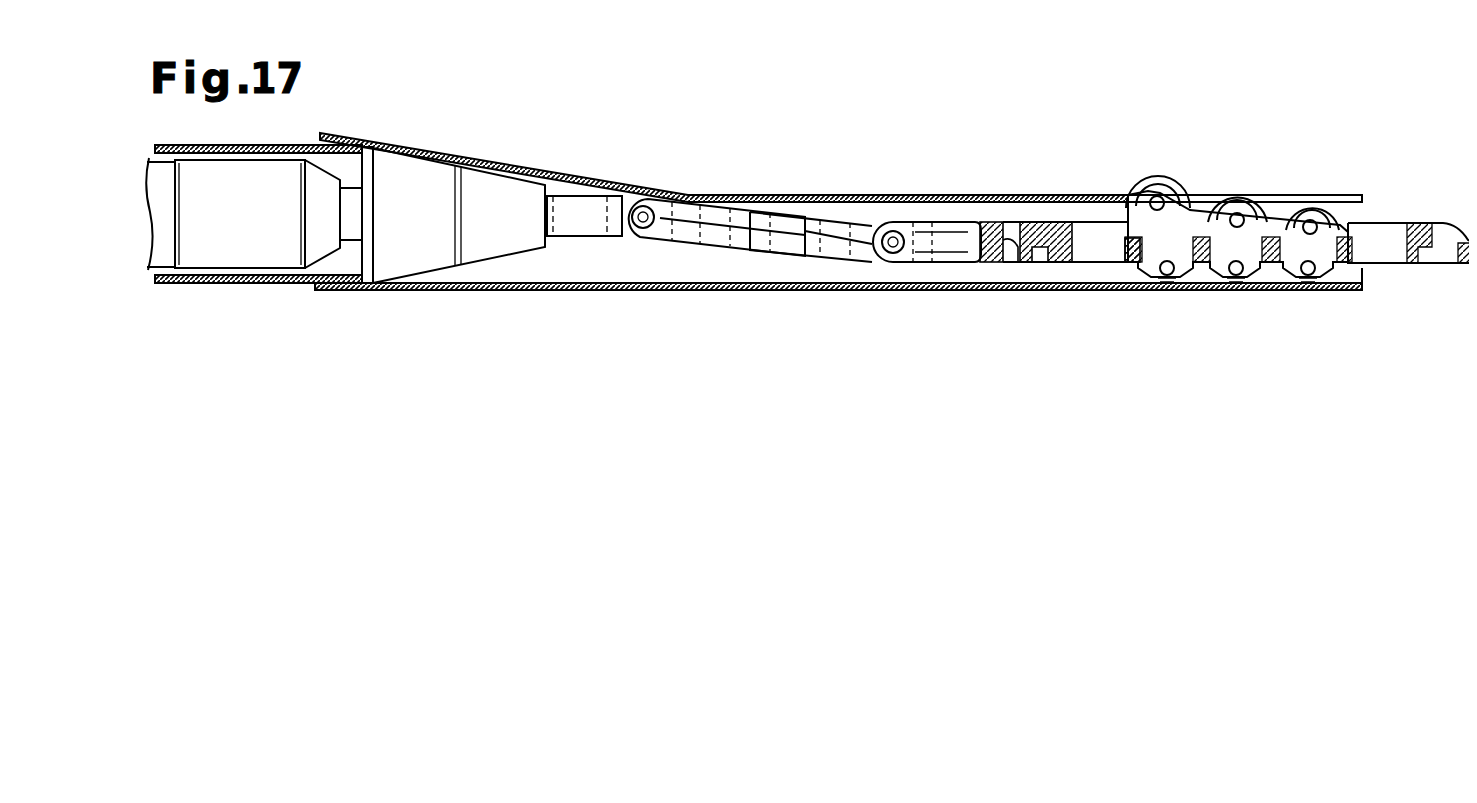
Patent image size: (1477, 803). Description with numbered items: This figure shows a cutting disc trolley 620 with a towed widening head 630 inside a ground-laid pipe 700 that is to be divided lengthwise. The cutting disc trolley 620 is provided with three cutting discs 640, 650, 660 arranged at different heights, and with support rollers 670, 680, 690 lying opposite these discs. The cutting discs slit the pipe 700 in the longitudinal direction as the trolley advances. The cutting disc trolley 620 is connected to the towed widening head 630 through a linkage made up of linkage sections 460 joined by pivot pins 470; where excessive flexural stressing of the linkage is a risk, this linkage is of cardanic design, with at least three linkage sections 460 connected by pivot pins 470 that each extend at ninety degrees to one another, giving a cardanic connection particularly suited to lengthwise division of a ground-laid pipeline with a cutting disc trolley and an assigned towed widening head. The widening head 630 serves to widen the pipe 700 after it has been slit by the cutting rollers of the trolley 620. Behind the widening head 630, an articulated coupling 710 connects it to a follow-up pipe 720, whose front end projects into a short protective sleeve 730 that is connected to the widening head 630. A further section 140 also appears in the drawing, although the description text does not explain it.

The inner tube section 140 is at (590, 212).
The linkage section 460 is at (707, 205).
The pivot pin 470 is at (650, 208).
The cutting disc trolley 620 is at (1270, 208).
The widening head 630 is at (410, 248).
The cutting disc 640 is at (1323, 201).
The cutting disc 650 is at (1235, 194).
The cutting disc 660 is at (1157, 181).
The support roller 670 is at (1310, 291).
The support roller 680 is at (1237, 291).
The support roller 690 is at (1167, 291).
The ground-laid pipe 700 is at (497, 291).
The articulated coupling 710 is at (353, 231).
The follow-up pipe 720 is at (255, 241).
The protective sleeve 730 is at (222, 285).